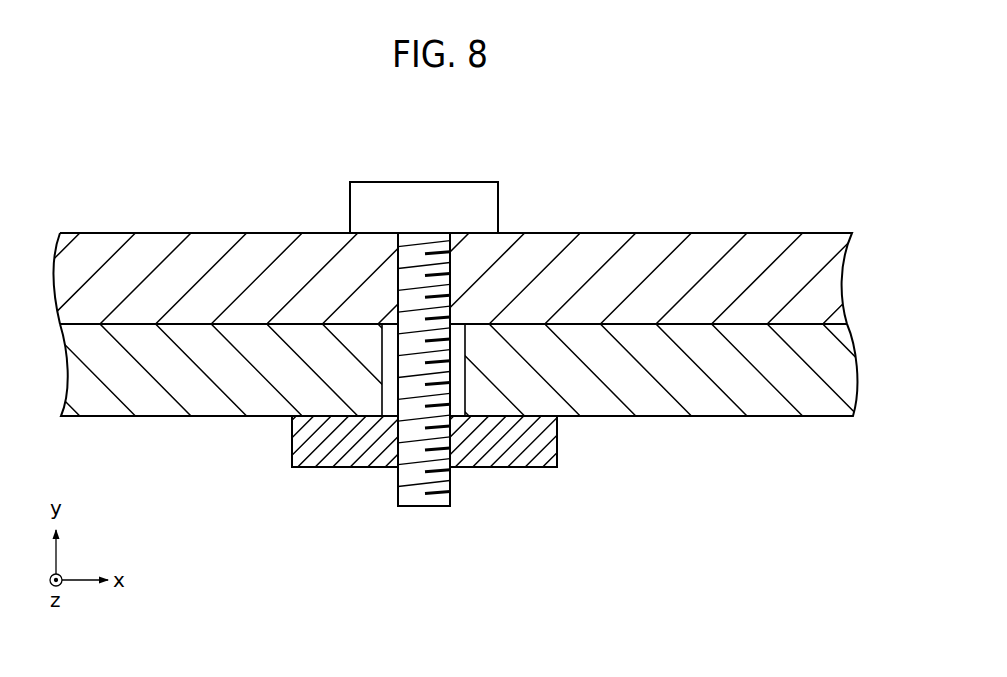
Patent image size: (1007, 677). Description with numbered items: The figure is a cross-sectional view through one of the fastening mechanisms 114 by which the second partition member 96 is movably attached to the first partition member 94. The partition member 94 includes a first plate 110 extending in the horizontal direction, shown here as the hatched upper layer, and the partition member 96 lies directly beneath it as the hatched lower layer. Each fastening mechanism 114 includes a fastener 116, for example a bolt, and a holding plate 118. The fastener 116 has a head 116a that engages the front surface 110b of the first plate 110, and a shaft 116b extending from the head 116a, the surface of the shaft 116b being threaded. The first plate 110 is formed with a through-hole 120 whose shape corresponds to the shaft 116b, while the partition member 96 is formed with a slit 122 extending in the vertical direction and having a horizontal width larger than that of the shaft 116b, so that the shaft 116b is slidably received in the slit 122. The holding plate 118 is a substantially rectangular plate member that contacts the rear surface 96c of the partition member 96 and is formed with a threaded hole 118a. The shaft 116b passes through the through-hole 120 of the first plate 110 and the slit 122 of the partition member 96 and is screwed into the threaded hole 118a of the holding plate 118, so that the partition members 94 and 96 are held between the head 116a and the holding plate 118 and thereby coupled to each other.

The partition member 94 is at (457, 335).
The partition member 96 is at (457, 428).
The rear surface 96c is at (770, 416).
The first plate 110 is at (457, 234).
The front surface 110b is at (662, 232).
The fastening mechanism 114 is at (400, 341).
The fastener 116 is at (440, 340).
The head 116a is at (417, 200).
The shaft 116b is at (467, 384).
The holding plate 118 is at (399, 502).
The threaded hole 118a is at (437, 465).
The through-hole 120 is at (453, 267).
The slit 122 is at (467, 387).